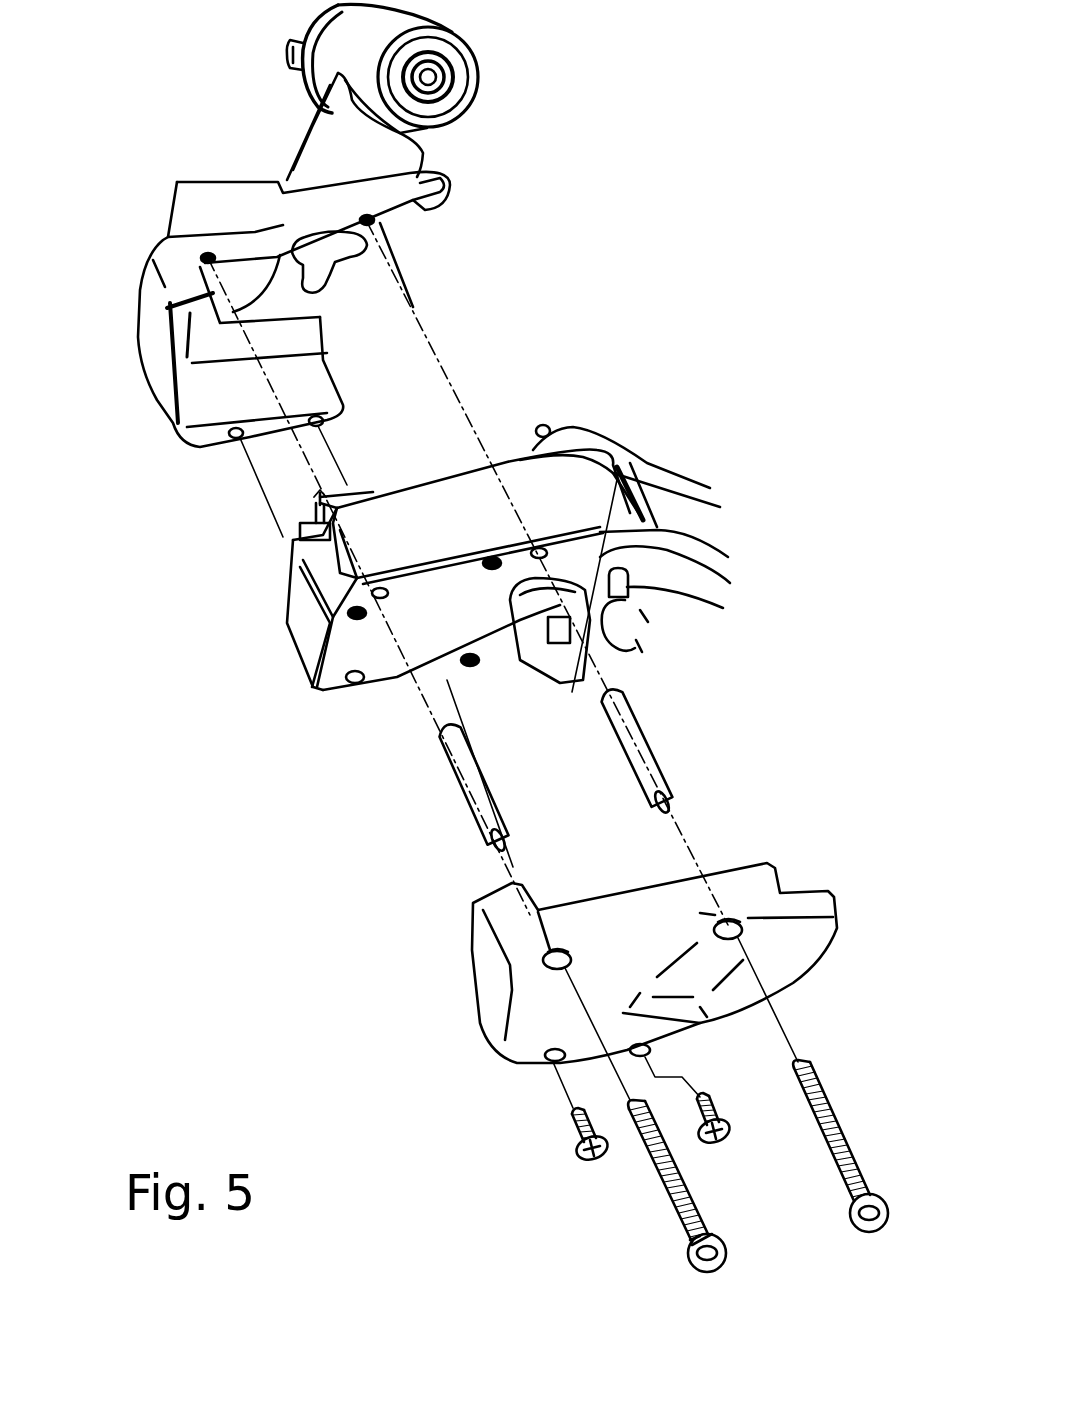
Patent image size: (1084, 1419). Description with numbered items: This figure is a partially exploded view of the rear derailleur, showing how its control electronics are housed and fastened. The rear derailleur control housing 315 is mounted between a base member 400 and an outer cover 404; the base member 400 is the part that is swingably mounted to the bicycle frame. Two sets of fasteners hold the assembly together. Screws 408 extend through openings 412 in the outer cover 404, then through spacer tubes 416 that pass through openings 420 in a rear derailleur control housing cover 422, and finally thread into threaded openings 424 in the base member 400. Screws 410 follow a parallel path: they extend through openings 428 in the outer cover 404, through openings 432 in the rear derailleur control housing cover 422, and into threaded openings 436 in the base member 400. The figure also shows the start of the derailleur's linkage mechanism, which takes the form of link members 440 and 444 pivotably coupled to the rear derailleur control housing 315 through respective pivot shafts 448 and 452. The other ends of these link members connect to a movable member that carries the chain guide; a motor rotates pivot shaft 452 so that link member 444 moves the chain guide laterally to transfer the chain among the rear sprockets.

The rear derailleur control housing 315 is at (292, 607).
The base member 400 is at (322, 127).
The outer cover 404 is at (483, 987).
The screws 408 is at (697, 1262).
The screws 410 is at (582, 1157).
The openings 412 is at (777, 888).
The spacer tubes 416 is at (650, 748).
The openings 420 is at (418, 563).
The rear derailleur control housing cover 422 is at (303, 680).
The threaded openings 424 is at (208, 258).
The openings 428 is at (635, 1045).
The openings 432 is at (472, 664).
The threaded openings 436 is at (318, 425).
The link member 440 is at (695, 518).
The link member 444 is at (620, 635).
The pivot shaft 448 is at (543, 425).
The pivot shaft 452 is at (560, 683).